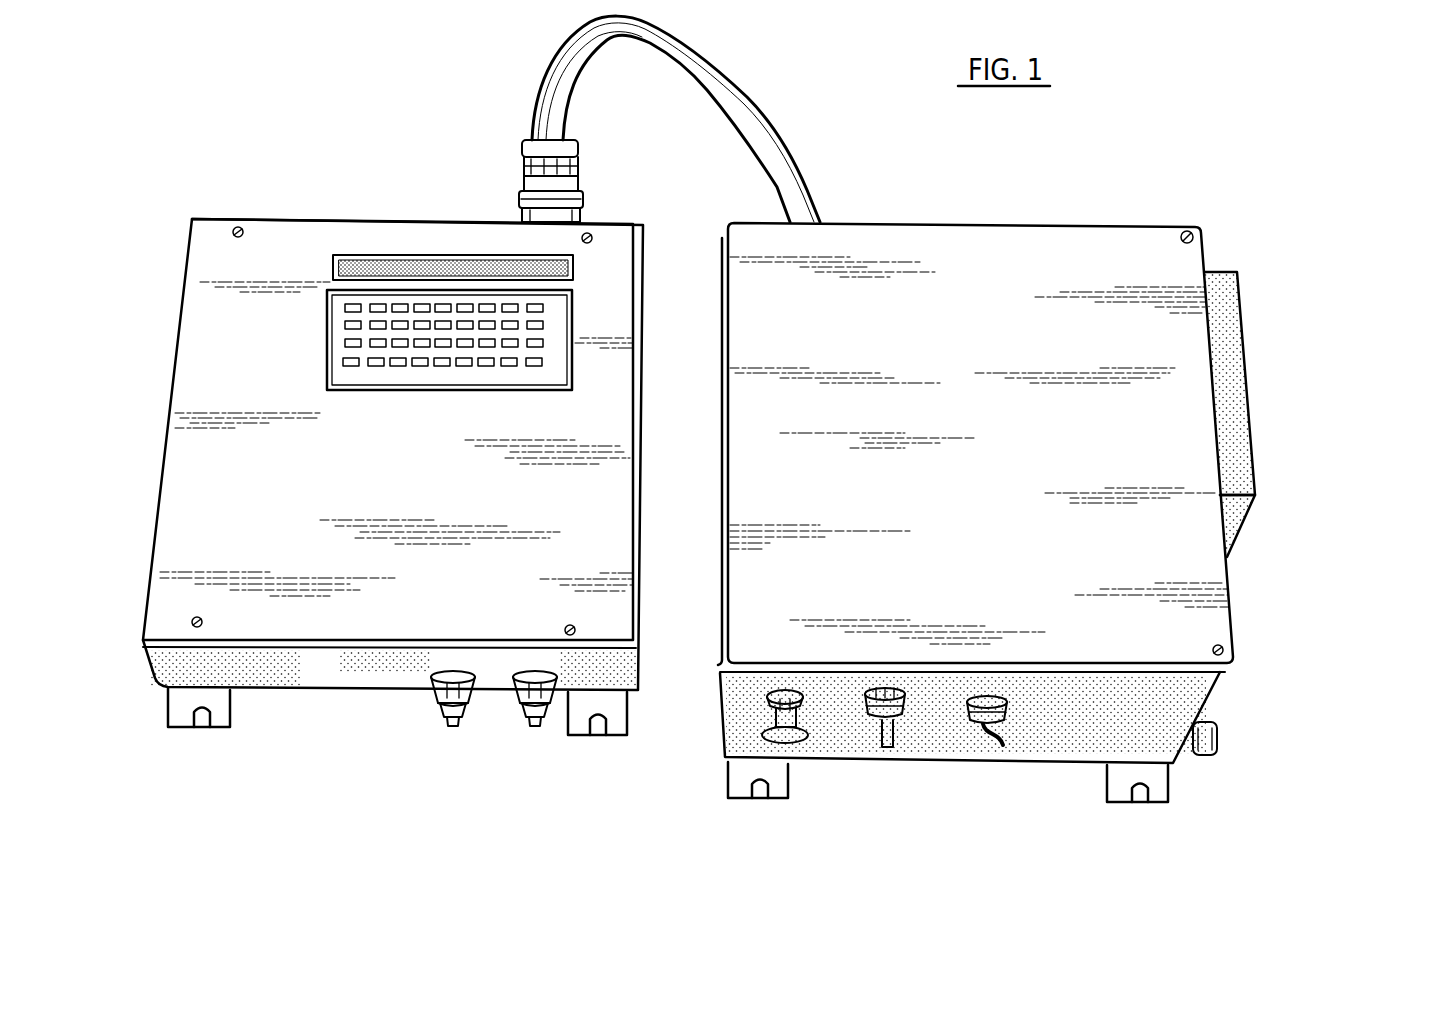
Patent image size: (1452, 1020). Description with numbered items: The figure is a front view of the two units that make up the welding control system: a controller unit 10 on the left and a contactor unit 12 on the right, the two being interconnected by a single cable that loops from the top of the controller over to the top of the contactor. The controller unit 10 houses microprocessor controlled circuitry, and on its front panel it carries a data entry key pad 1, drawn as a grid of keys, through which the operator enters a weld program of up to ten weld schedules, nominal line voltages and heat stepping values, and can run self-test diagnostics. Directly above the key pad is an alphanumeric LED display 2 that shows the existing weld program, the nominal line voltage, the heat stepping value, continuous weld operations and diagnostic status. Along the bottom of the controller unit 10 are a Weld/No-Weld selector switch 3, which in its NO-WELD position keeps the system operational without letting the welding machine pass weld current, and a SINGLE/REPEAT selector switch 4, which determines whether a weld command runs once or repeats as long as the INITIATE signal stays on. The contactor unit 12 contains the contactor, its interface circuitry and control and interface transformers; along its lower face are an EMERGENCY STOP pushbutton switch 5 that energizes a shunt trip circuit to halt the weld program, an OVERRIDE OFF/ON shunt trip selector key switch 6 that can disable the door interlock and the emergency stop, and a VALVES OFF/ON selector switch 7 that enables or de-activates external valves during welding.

The data entry key pad 1 is at (324, 320).
The alphanumeric LED display 2 is at (408, 249).
The Weld/No-Weld selector switch 3 is at (452, 727).
The SINGLE/REPEAT selector switch 4 is at (534, 727).
The EMERGENCY STOP pushbutton switch 5 is at (800, 738).
The OVERRIDE OFF/ON shunt trip selector key switch 6 is at (893, 720).
The VALVES OFF/ON selector switch 7 is at (977, 740).
The controller unit 10 is at (274, 252).
The contactor unit 12 is at (938, 288).